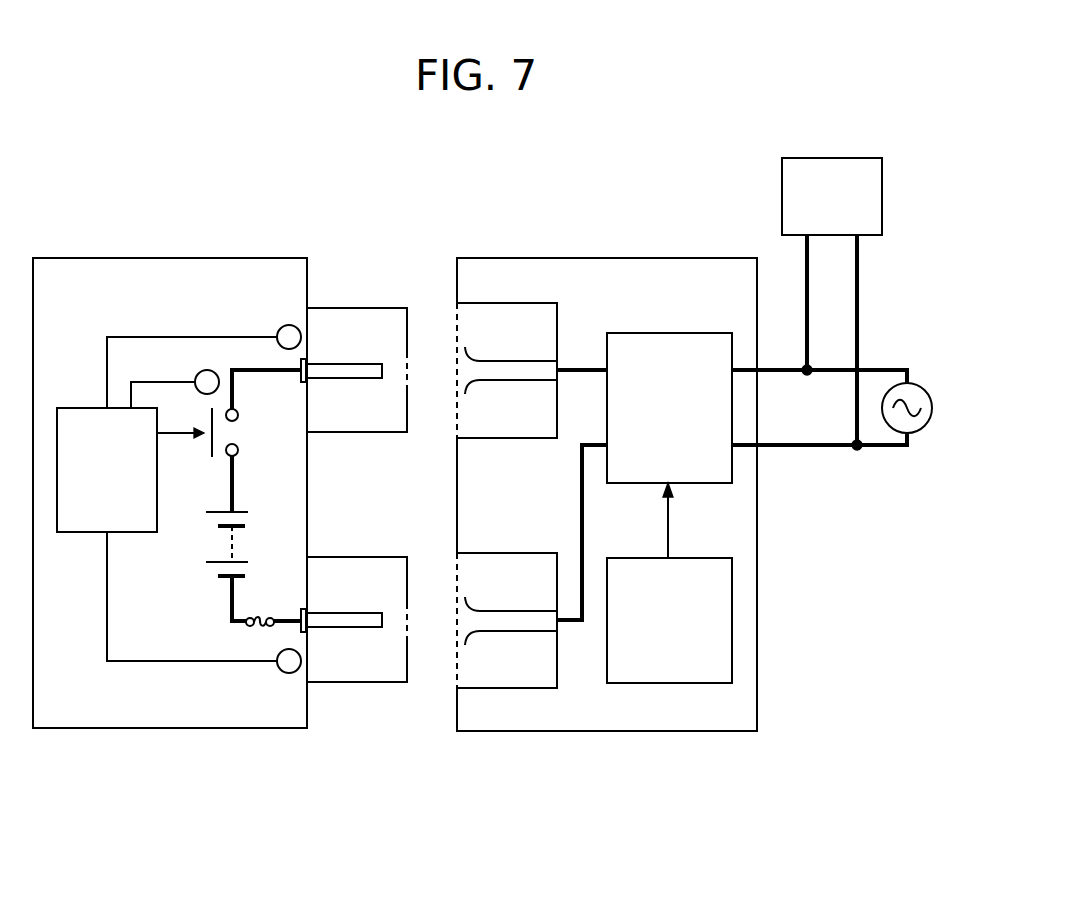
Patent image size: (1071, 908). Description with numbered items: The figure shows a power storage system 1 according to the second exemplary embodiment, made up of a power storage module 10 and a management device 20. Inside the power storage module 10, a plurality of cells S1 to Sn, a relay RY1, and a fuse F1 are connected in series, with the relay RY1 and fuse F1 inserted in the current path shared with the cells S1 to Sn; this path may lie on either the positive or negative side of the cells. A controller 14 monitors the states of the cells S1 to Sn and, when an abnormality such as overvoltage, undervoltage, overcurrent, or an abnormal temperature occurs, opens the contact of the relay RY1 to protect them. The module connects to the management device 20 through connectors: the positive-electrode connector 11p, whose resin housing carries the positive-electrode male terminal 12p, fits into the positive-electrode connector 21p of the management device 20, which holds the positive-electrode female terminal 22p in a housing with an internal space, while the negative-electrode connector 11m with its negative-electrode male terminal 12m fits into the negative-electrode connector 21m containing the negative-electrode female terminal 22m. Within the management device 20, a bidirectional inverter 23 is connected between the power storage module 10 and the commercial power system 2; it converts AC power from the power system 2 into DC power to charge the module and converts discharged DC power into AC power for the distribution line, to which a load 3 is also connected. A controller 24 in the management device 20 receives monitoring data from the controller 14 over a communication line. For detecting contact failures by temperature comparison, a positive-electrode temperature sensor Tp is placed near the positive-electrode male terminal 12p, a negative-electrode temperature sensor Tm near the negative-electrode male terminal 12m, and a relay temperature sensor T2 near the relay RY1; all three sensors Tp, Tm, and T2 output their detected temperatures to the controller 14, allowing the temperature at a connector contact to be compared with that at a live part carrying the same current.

The power storage system 1 is at (440, 850).
The power system 2 is at (924, 390).
The load 3 is at (857, 158).
The power storage module 10 is at (275, 258).
The positive-electrode connector 11p is at (380, 308).
The negative-electrode connector 11m is at (382, 557).
The positive-electrode male terminal 12p is at (342, 363).
The negative-electrode male terminal 12m is at (345, 613).
The controller 14 is at (83, 408).
The management device 20 is at (737, 258).
The positive-electrode connector 21p is at (557, 345).
The negative-electrode connector 21m is at (510, 553).
The positive-electrode female terminal 22p is at (497, 361).
The negative-electrode female terminal 22m is at (497, 611).
The bidirectional inverter 23 is at (700, 333).
The controller 24 is at (700, 558).
The positive-electrode temperature sensor Tp is at (204, 355).
The relay temperature sensor T2 is at (176, 376).
The negative-electrode temperature sensor Tm is at (206, 615).
The relay RY1 is at (229, 413).
The cell S1 is at (238, 509).
The cell Sn is at (238, 580).
The fuse F1 is at (274, 607).